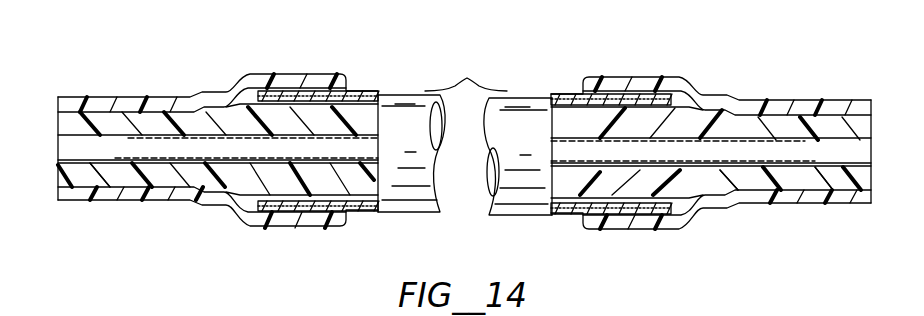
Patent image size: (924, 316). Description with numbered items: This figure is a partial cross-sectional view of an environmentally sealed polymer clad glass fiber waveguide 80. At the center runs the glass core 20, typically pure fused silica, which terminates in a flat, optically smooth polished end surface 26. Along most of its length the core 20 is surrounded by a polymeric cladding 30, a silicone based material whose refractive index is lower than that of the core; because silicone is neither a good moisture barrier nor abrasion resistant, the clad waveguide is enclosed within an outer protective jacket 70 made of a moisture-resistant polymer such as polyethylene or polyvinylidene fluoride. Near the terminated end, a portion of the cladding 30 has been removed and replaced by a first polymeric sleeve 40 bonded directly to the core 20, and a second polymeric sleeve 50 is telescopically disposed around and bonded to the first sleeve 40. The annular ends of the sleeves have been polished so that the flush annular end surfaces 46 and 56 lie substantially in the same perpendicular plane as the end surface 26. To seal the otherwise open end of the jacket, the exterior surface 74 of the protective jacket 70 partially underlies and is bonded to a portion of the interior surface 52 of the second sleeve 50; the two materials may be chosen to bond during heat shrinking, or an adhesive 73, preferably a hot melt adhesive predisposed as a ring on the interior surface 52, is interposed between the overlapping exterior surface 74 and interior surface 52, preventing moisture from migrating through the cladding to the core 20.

The environmentally sealed polymer clad glass fiber waveguide 80 is at (206, 51).
The second polymeric sleeve 50 is at (131, 105).
The interior surface 52 is at (236, 222).
The end surface 26 is at (58, 140).
The glass core 20 is at (147, 150).
The flush annular end surface 46 is at (58, 178).
The flush annular end surface 56 is at (58, 196).
The first polymeric sleeve 40 is at (86, 177).
The polymeric cladding 30 is at (222, 181).
The adhesive 73 is at (345, 93).
The exterior surface 74 is at (466, 72).
The protective jacket 70 is at (360, 208).